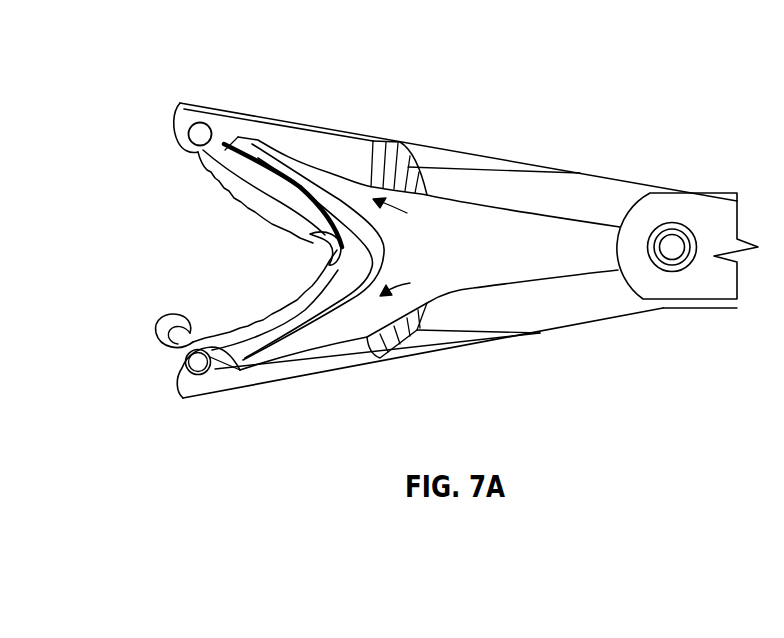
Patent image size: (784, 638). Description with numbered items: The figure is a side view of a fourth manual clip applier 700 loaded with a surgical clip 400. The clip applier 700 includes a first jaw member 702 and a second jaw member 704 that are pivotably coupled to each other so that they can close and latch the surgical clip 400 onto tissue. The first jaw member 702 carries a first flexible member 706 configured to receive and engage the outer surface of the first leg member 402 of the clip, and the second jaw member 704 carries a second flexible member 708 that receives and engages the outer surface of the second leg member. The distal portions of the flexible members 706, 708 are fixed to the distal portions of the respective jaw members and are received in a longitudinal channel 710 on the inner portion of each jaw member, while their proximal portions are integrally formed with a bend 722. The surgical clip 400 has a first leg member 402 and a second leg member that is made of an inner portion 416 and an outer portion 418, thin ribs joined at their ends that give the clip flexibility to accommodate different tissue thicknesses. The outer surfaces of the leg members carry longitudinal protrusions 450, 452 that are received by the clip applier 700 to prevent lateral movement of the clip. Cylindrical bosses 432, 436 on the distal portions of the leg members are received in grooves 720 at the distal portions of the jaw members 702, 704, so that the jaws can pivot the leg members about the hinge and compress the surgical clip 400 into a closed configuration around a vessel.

The clip applier 700 is at (592, 102).
The first jaw member 702 is at (503, 323).
The second jaw member 704 is at (470, 156).
The first flexible member 706 is at (328, 310).
The second flexible member 708 is at (307, 173).
The longitudinal channel 710 is at (416, 248).
The groove 720 is at (188, 115).
The bend 722 is at (388, 244).
The surgical clip 400 is at (204, 282).
The first leg member 402 is at (257, 323).
The inner portion 416 is at (227, 187).
The outer portion 418 is at (228, 143).
The boss 432 is at (204, 373).
The boss 436 is at (188, 132).
The longitudinal protrusion 450 is at (238, 370).
The longitudinal protrusion 452 is at (262, 142).